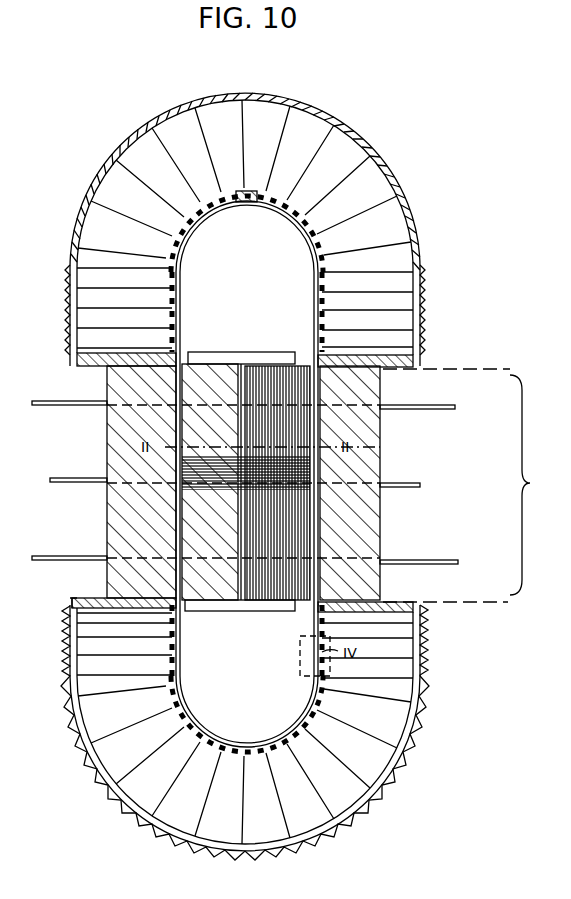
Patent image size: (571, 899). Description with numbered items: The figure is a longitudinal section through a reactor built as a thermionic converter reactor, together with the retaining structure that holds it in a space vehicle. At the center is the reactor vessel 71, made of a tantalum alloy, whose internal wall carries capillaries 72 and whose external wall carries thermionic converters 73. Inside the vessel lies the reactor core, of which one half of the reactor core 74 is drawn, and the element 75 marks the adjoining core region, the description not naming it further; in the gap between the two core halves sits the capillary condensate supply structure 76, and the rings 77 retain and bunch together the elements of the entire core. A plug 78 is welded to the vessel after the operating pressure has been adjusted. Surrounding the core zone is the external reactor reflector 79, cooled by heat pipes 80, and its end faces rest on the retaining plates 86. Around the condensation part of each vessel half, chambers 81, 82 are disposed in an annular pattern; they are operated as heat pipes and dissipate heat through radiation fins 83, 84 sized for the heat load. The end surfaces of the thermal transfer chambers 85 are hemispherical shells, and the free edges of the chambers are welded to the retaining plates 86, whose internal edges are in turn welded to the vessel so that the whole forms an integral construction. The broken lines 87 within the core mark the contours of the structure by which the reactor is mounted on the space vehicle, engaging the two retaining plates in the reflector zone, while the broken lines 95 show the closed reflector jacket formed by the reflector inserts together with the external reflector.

The reactor vessel 71 is at (180, 618).
The capillaries 72 is at (300, 705).
The thermionic converters 73 is at (72, 640).
The half of the reactor core 74 is at (195, 543).
The outer block 75 is at (200, 428).
The capillary condensate supply structure 76 is at (182, 517).
The rings 77 is at (265, 372).
The plug 78 is at (243, 203).
The external reactor reflector 79 is at (373, 447).
The heat pipes 80 is at (433, 405).
The chambers 81 is at (415, 717).
The chambers 82 is at (413, 277).
The radiation fins 83 is at (410, 742).
The radiation fins 84 is at (420, 318).
The thermal transfer chambers 85 is at (420, 293).
The retaining plates 86 is at (85, 363).
The broken lines 87 is at (465, 485).
The broken lines 95 is at (225, 398).